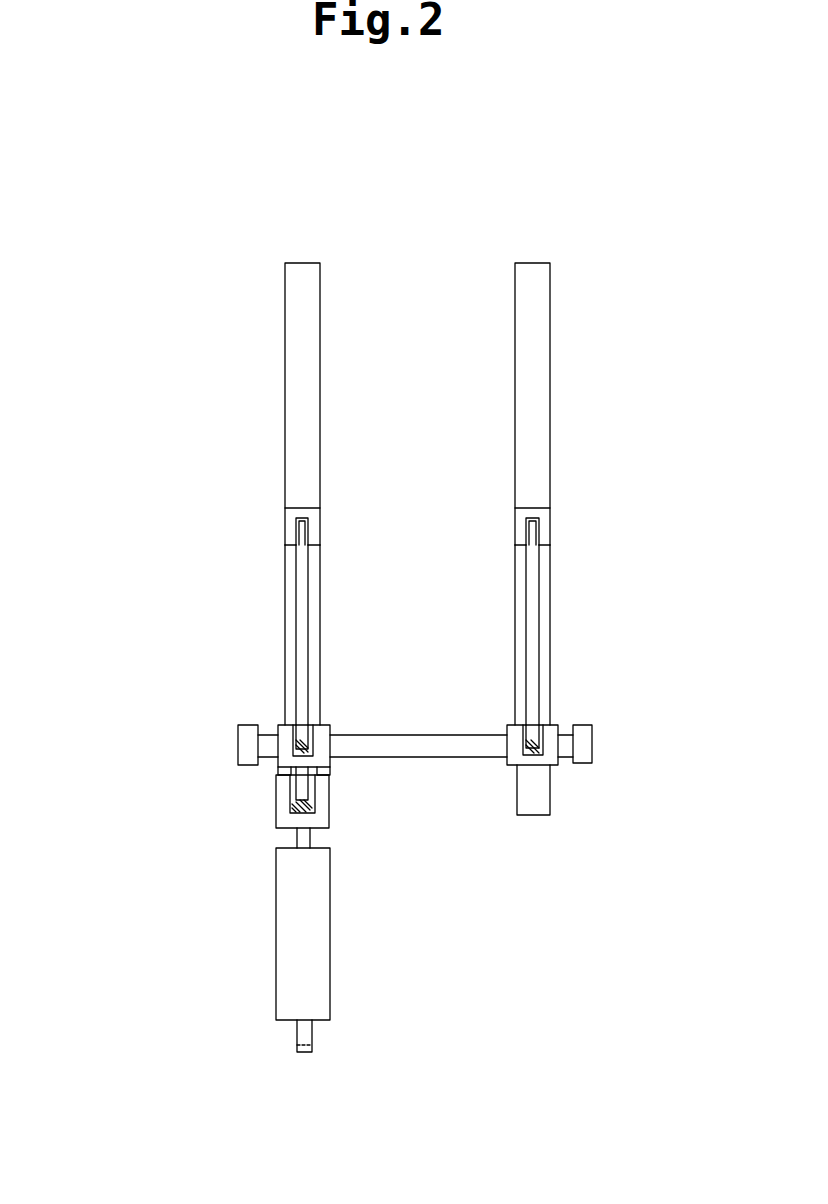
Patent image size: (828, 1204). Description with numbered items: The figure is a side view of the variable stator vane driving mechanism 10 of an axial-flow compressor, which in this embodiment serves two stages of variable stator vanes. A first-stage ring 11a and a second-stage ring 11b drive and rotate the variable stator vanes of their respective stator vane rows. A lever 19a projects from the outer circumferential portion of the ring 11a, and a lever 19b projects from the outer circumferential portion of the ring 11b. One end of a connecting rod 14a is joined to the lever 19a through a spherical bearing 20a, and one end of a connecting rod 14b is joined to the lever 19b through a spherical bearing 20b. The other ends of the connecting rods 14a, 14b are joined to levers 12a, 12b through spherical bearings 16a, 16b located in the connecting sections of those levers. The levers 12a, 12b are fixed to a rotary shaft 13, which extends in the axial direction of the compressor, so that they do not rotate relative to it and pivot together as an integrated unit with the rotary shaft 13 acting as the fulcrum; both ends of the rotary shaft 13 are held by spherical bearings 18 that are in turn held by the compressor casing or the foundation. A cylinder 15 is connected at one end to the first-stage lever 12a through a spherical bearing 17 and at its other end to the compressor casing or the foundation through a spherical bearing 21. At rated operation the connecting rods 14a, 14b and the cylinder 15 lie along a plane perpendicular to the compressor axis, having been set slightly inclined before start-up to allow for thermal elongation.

The variable stator vane driving mechanism 10 is at (563, 240).
The ring 11a is at (287, 263).
The ring 11b is at (515, 263).
The lever 12a is at (279, 724).
The lever 12b is at (508, 724).
The rotary shaft 13 is at (426, 762).
The connecting rod 14a is at (296, 620).
The connecting rod 14b is at (527, 620).
The cylinder 15 is at (277, 990).
The spherical bearing 16a is at (327, 730).
The spherical bearing 16b is at (556, 730).
The spherical bearing 17 is at (290, 795).
The spherical bearing 18 is at (237, 760).
The lever 19a is at (285, 510).
The lever 19b is at (516, 510).
The spherical bearing 20a is at (297, 528).
The spherical bearing 20b is at (527, 528).
The spherical bearing 21 is at (297, 1035).